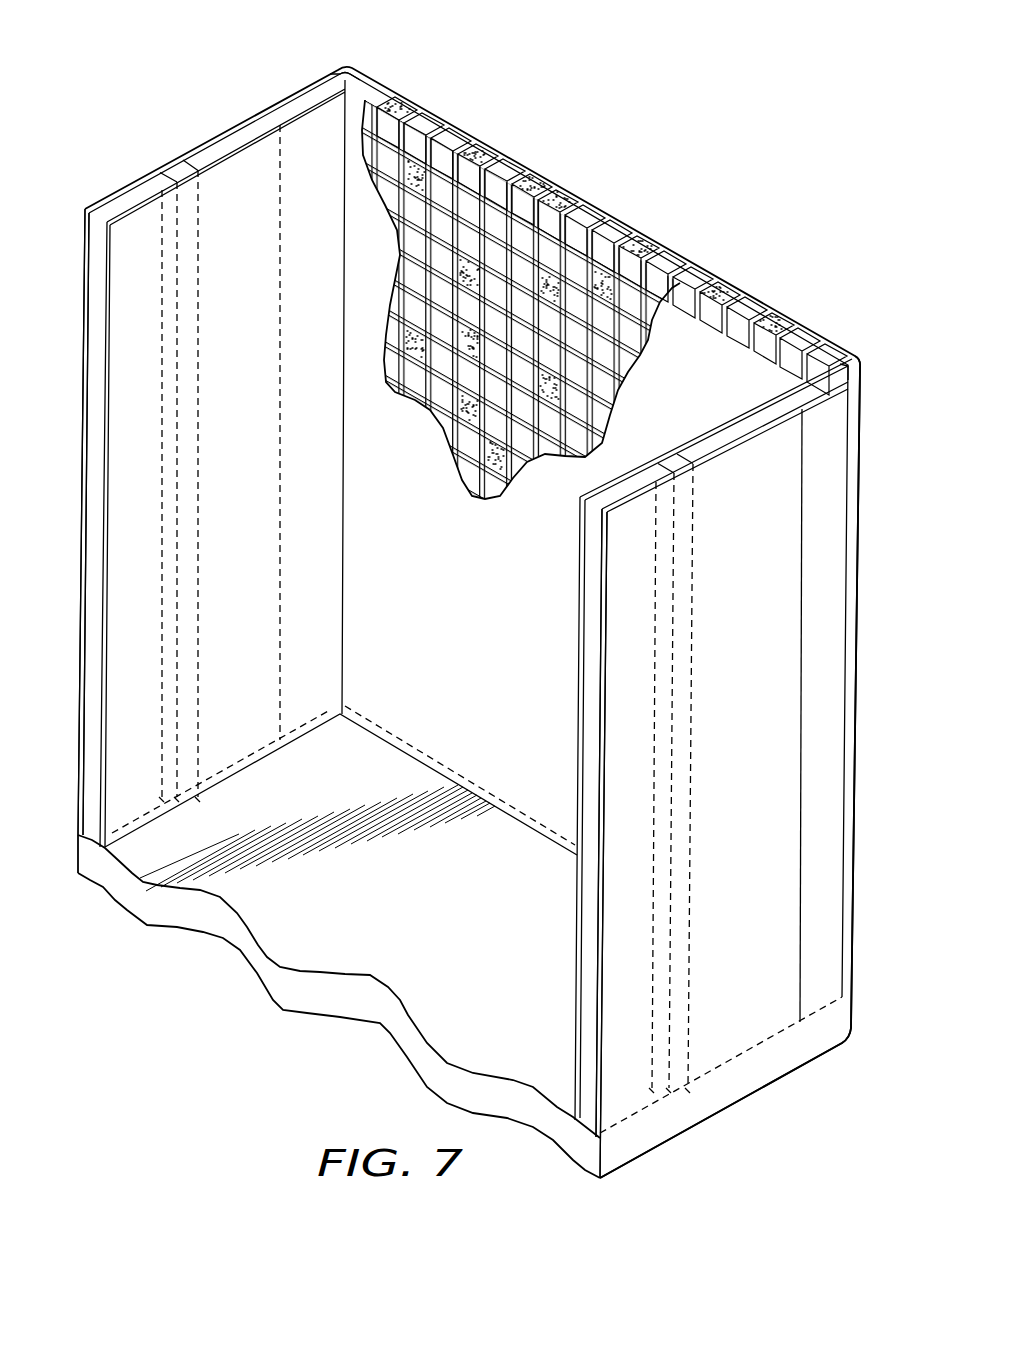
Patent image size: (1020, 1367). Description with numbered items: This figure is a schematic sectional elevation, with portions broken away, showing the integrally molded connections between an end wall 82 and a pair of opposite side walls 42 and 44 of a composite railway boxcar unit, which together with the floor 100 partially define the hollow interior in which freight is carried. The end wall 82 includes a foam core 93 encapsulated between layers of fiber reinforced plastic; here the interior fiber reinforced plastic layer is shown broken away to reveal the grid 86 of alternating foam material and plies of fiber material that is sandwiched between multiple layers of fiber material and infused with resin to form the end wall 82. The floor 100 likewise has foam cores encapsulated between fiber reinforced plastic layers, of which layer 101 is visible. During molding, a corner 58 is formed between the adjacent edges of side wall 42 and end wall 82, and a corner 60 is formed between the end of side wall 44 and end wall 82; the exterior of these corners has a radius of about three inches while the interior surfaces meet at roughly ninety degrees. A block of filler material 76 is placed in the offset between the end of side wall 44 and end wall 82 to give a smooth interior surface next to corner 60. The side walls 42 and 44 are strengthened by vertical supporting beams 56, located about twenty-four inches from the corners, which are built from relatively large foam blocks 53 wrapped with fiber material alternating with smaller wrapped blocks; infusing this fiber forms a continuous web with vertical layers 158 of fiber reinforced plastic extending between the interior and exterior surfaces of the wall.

The side wall 44 is at (215, 76).
The filler block 76 is at (318, 88).
The corner 60 is at (349, 65).
The vertical layers of fiber reinforced plastic 158 is at (197, 157).
The vertical supporting beams 56 is at (176, 166).
The first foam blocks 53 is at (94, 256).
The foam core 93 is at (456, 130).
The end wall 82 is at (634, 182).
The grid 86 is at (427, 412).
The corner 58 is at (858, 507).
The layer of fiber reinforced plastic 101 is at (276, 931).
The floor 100 is at (762, 1073).
The side wall 42 is at (630, 1090).